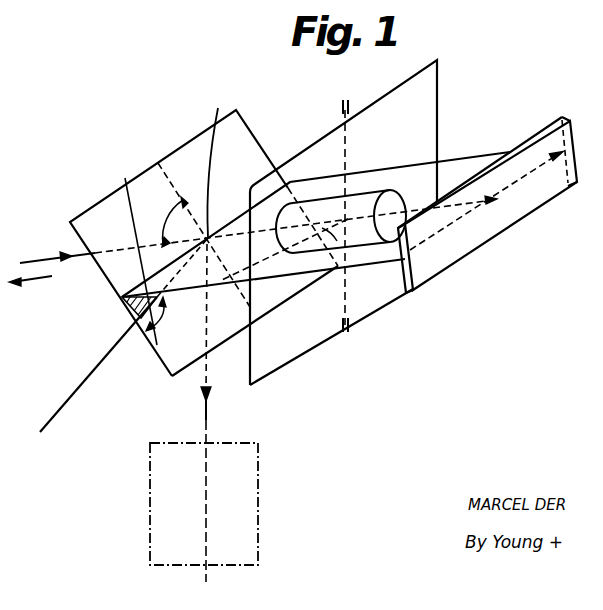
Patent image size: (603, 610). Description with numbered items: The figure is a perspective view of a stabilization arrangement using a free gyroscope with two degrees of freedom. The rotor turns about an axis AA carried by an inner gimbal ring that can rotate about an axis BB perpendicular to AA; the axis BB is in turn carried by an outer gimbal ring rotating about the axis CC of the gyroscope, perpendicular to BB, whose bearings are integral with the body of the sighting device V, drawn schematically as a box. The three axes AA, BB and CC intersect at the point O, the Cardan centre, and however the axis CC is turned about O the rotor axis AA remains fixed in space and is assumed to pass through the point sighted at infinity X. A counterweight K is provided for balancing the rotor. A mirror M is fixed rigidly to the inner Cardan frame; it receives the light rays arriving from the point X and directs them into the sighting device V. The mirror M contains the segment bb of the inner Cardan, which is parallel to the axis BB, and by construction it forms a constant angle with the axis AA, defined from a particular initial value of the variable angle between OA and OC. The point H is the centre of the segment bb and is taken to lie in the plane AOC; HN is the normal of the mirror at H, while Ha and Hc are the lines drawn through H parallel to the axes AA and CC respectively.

The mirror M is at (192, 160).
The centre of segment bb H is at (218, 160).
The normal of the mirror N is at (124, 335).
The parallel to axis AA through H a is at (258, 239).
The point sighted at infinity X is at (30, 293).
The parallel to axis CC through H c is at (209, 413).
The sighting device V is at (257, 480).
The segment bb of the inner Cardan b is at (122, 297).
The axis BB B is at (250, 305).
The axis CC C is at (348, 106).
The Cardan centre O is at (350, 215).
The counterweight K is at (538, 210).
The axis AA A is at (215, 234).